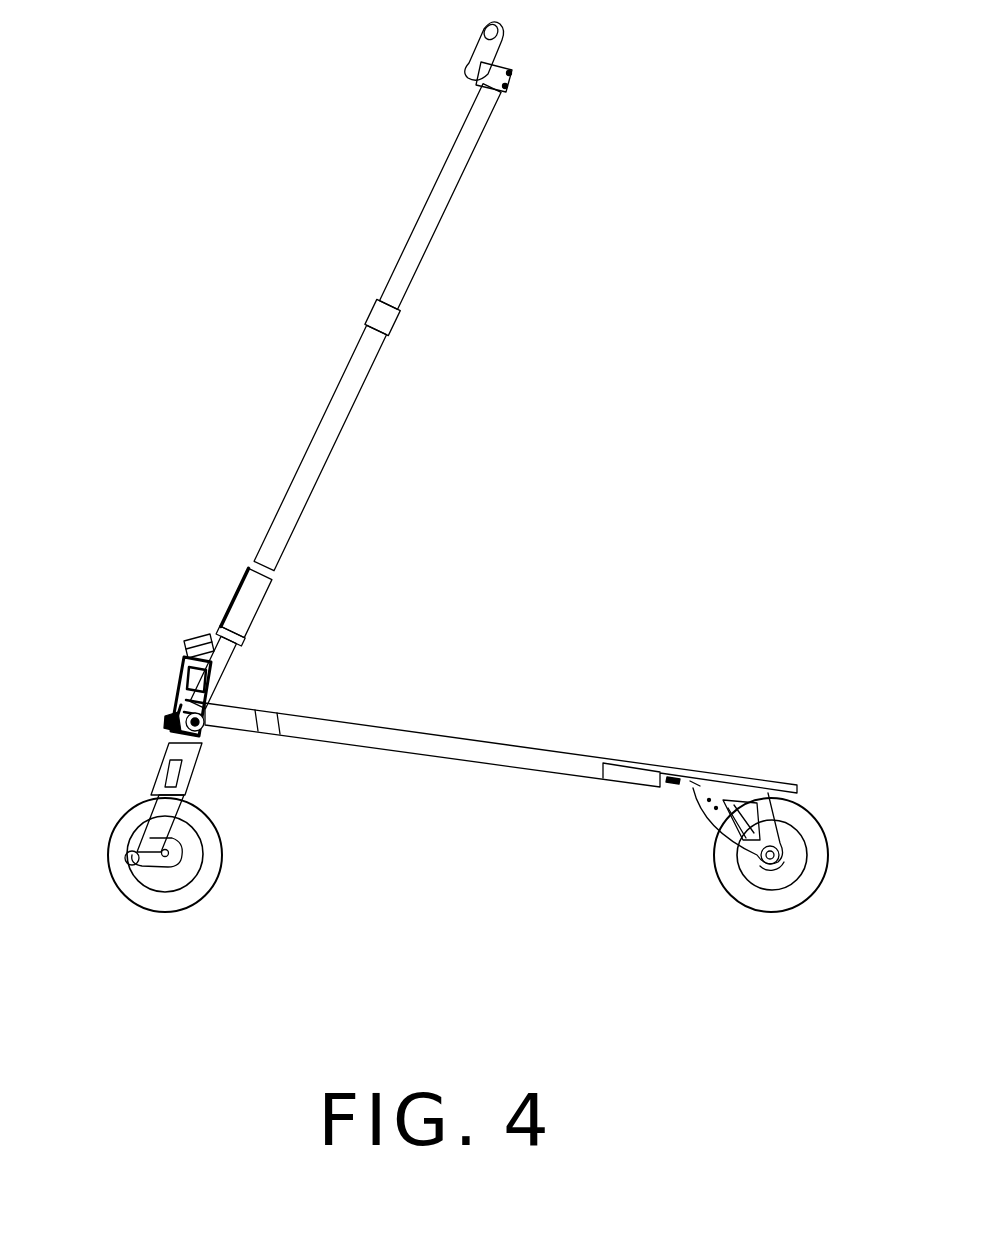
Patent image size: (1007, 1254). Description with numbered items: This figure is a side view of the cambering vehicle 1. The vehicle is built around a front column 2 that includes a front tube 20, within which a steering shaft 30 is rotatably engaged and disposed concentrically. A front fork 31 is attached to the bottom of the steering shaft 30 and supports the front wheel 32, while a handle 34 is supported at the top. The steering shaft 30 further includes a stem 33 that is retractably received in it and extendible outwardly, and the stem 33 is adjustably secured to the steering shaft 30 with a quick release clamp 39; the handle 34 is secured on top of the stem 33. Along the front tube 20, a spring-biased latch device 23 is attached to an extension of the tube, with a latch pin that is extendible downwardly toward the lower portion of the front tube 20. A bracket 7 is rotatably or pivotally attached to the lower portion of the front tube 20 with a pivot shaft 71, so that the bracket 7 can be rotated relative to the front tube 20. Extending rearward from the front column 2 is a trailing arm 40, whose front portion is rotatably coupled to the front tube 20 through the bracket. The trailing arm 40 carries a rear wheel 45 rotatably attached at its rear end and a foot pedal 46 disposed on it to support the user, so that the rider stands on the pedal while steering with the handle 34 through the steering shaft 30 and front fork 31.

The cambering vehicle 1 is at (284, 230).
The front column 2 is at (189, 542).
The bracket 7 is at (182, 680).
The front tube 20 is at (216, 683).
The spring-biased latch device 23 is at (195, 636).
The steering shaft 30 is at (335, 435).
The front fork 31 is at (158, 792).
The front wheel 32 is at (202, 884).
The stem 33 is at (445, 195).
The handle 34 is at (488, 58).
The quick release clamp 39 is at (392, 318).
The trailing arm 40 is at (470, 755).
The rear wheel 45 is at (797, 892).
The foot pedal 46 is at (728, 773).
The pivot shaft 71 is at (178, 707).